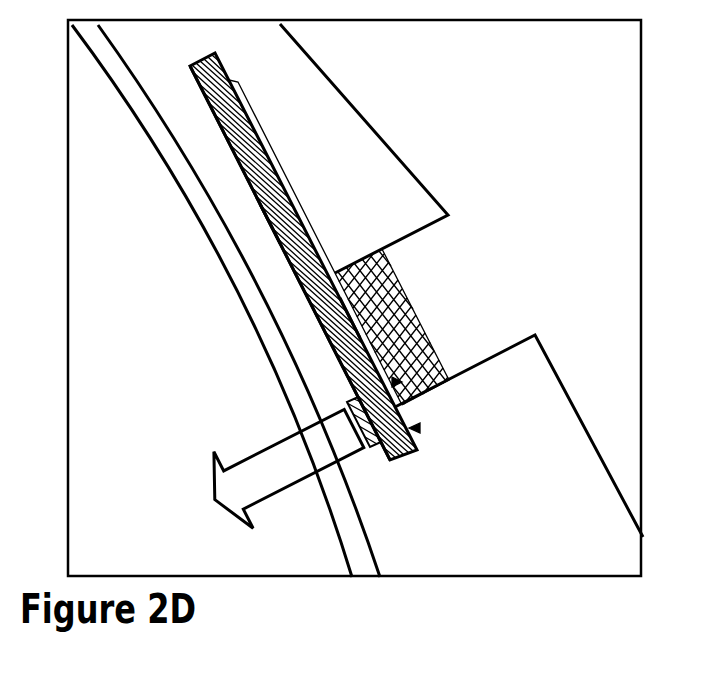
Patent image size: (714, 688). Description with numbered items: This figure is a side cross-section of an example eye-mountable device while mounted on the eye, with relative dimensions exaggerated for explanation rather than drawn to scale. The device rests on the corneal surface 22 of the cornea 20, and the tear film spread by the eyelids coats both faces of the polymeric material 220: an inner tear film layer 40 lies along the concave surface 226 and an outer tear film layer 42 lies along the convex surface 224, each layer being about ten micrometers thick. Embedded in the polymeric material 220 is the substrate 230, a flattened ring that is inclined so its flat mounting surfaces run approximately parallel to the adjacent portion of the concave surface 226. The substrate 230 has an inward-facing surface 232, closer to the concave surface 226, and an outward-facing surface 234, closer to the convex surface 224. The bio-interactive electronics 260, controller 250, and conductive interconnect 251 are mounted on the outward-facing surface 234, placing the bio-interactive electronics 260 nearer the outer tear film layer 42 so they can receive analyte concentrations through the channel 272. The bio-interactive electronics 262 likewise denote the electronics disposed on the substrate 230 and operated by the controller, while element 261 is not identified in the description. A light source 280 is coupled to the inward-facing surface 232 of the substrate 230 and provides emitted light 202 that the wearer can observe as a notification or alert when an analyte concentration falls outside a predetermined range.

The cornea 20 is at (141, 554).
The corneal surface 22 is at (239, 301).
The inner tear film layer 40 is at (239, 301).
The outer tear film layer 42 is at (392, 148).
The emitted light 202 is at (283, 437).
The polymeric material 220 is at (569, 554).
The convex surface 224 is at (357, 98).
The concave surface 226 is at (255, 330).
The substrate 230 is at (421, 428).
The inward-facing surface 232 is at (196, 79).
The outward-facing surface 234 is at (248, 246).
The controller 250 is at (266, 143).
The conductive interconnect 251 is at (280, 235).
The bio-interactive electronics 260 is at (355, 323).
The gap 261 is at (398, 272).
The bio-interactive electronics 262 is at (430, 335).
The channel 272 is at (467, 309).
The light source 280 is at (372, 447).